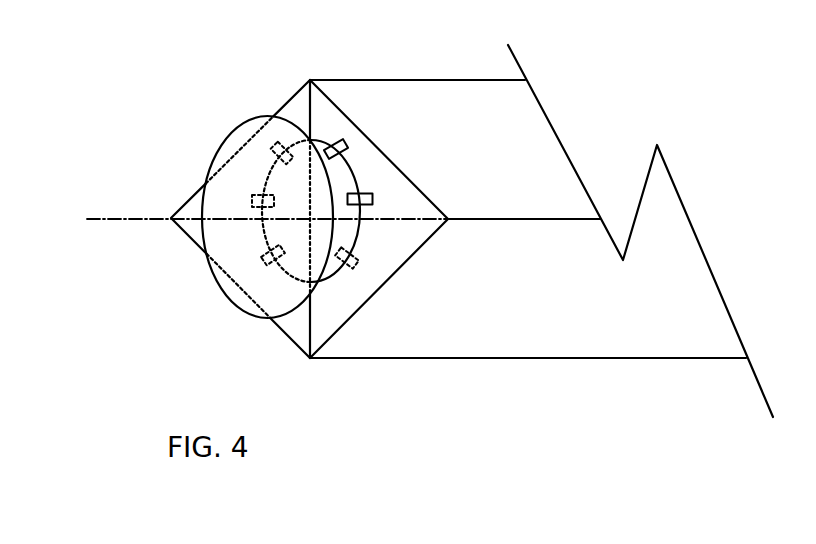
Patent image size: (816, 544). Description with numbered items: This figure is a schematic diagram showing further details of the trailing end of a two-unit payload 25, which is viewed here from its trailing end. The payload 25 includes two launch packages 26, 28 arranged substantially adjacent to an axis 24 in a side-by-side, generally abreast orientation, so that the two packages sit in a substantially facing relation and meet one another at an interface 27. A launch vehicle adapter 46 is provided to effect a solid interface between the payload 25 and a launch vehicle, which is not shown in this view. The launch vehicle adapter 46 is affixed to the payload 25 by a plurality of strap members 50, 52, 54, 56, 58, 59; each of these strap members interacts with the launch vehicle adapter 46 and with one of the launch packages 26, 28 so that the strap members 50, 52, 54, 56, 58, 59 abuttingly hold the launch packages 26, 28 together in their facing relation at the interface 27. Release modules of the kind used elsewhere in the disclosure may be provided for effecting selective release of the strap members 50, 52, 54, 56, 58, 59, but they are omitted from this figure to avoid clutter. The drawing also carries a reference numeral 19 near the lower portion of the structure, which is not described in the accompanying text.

The nozzle housing 19 is at (294, 330).
The axis 24 is at (110, 218).
The payload 25 is at (285, 37).
The launch package 26 is at (186, 213).
The interface 27 is at (308, 226).
The launch package 28 is at (352, 302).
The launch vehicle adapter 46 is at (216, 150).
The strap member 50 is at (348, 157).
The strap member 52 is at (373, 199).
The strap member 54 is at (360, 260).
The strap member 56 is at (262, 258).
The strap member 58 is at (252, 201).
The strap member 59 is at (272, 155).